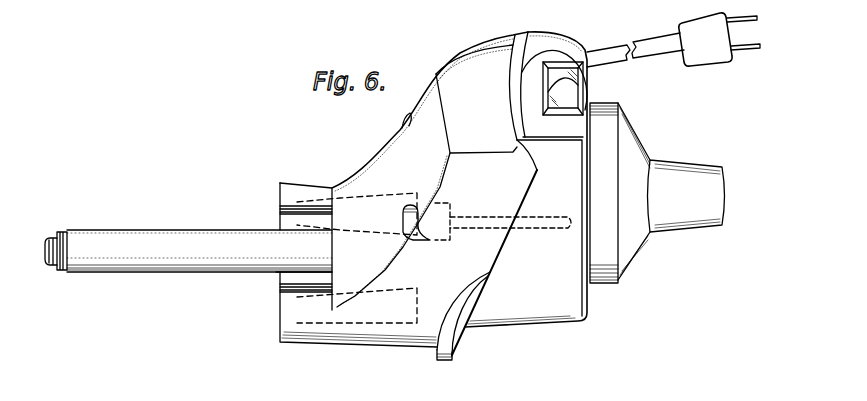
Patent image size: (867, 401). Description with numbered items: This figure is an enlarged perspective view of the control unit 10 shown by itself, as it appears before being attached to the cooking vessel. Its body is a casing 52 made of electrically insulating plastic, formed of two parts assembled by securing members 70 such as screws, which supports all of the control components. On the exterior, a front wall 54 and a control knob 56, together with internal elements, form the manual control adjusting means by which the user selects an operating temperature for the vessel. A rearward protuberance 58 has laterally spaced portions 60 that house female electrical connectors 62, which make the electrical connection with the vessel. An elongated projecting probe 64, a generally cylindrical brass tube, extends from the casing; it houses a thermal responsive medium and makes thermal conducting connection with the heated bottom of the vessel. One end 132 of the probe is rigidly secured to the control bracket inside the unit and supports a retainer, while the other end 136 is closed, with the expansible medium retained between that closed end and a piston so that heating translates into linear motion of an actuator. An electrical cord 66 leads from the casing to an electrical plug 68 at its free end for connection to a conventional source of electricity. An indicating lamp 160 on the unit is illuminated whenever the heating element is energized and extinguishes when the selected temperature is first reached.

The control unit 10 is at (303, 176).
The casing 52 is at (449, 372).
The front wall 54 is at (592, 285).
The control knob 56 is at (698, 228).
The rearward protuberance 58 is at (284, 216).
The laterally spaced portions 60 is at (279, 183).
The female electrical connectors 62 is at (355, 193).
The projecting probe 64 is at (163, 267).
The electrical cord 66 is at (605, 55).
The electrical plug 68 is at (705, 58).
The securing members 70 is at (473, 228).
The probe end 132 is at (275, 272).
The closed end of probe 136 is at (60, 232).
The indicating lamp 160 is at (570, 106).